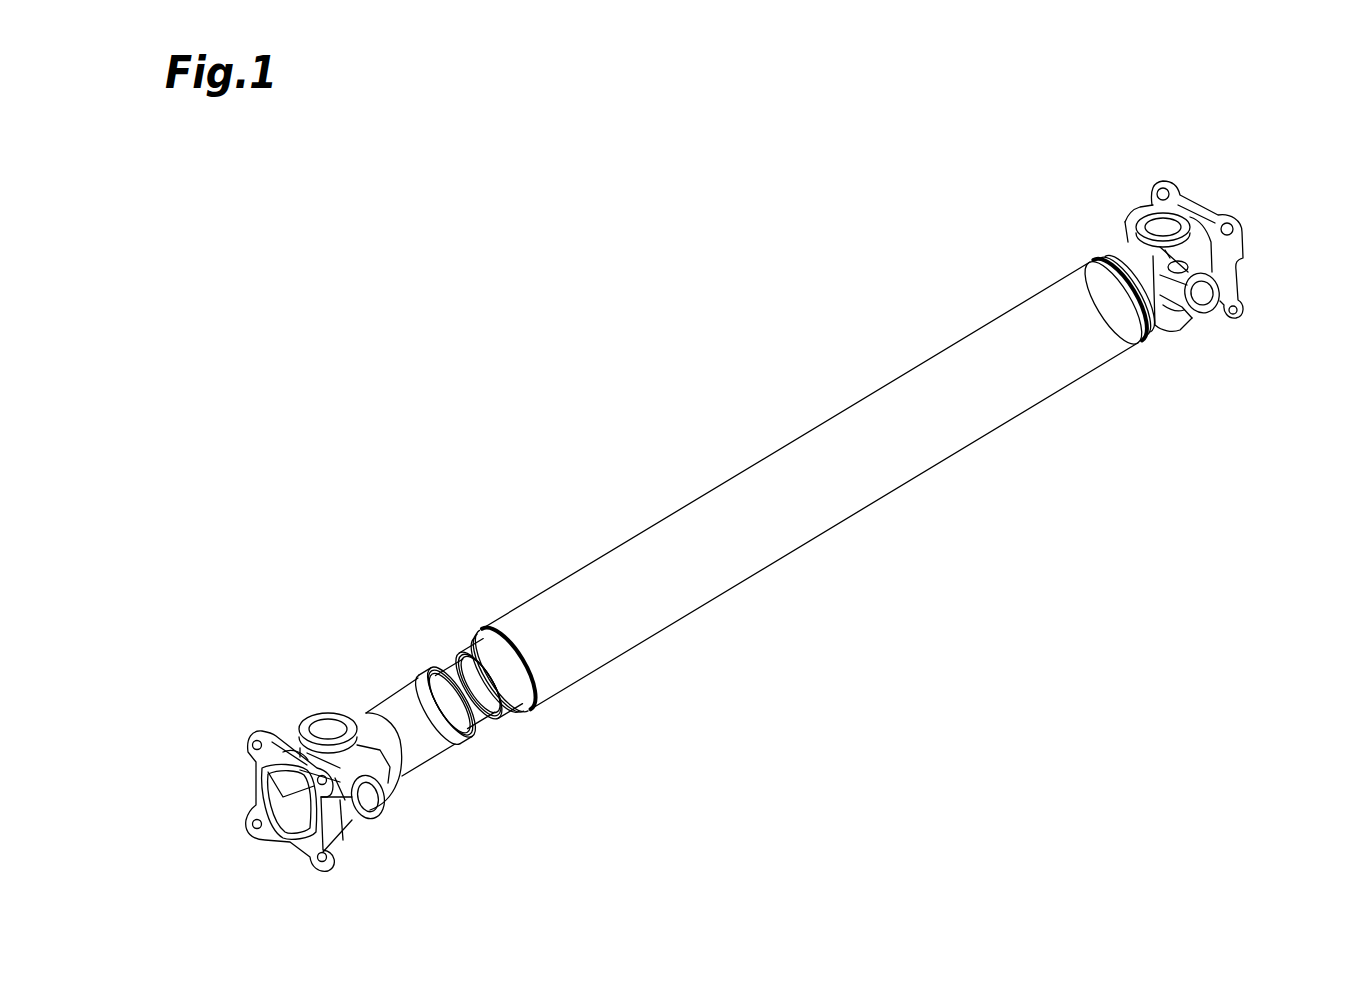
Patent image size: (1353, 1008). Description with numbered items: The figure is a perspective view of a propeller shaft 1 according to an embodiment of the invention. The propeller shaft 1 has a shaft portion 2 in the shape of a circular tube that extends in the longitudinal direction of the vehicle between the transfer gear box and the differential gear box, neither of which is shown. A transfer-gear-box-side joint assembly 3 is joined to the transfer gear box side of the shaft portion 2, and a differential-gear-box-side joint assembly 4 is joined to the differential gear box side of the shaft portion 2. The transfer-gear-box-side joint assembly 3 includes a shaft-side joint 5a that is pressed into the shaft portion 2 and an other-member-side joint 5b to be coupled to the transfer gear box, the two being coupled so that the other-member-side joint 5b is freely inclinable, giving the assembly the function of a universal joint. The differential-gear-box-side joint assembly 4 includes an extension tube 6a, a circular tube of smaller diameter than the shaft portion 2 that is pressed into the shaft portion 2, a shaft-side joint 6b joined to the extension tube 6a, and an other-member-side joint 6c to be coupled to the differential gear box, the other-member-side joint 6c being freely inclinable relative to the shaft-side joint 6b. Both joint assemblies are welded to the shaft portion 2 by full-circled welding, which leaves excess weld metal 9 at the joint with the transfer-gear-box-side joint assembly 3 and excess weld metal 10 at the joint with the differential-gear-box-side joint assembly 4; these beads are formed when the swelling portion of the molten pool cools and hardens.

The propeller shaft 1 is at (563, 252).
The shaft portion 2 is at (750, 466).
The transfer-gear-box-side joint assembly 3 is at (1163, 116).
The differential-gear-box-side joint assembly 4 is at (420, 570).
The shaft-side joint 5a is at (1121, 255).
The other-member-side joint 5b is at (1163, 184).
The extension tube 6a is at (457, 665).
The shaft-side joint 6b is at (362, 727).
The other-member-side joint 6c is at (268, 732).
The excess weld metal 9 is at (1082, 268).
The excess weld metal 10 is at (508, 640).